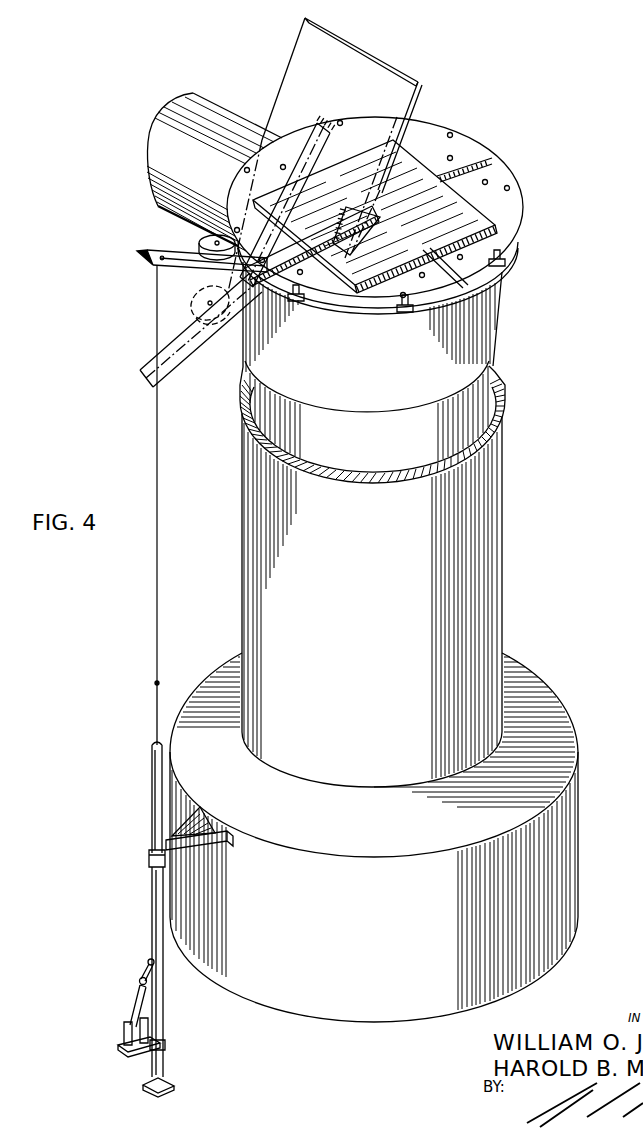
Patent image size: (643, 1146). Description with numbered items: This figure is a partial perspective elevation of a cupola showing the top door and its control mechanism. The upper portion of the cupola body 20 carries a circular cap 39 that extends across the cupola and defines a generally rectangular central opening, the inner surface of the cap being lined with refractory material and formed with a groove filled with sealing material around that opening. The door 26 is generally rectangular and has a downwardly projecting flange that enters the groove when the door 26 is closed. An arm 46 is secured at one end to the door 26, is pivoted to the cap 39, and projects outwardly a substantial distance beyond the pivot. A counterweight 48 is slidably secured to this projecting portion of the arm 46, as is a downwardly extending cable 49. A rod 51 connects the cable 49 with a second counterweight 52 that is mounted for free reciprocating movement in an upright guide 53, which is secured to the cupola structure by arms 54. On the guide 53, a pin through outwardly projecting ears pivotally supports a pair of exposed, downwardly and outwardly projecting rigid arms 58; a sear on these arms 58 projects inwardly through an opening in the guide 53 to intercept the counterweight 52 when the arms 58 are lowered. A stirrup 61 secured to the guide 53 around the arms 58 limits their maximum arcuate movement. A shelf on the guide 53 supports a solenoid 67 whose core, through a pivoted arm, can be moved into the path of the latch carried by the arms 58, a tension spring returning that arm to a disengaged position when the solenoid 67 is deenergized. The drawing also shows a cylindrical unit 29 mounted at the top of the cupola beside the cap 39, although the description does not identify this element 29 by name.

The cupola body 20 is at (497, 477).
The door 26 is at (400, 80).
The motor 29 is at (215, 112).
The circular cap 39 is at (467, 157).
The arm 46 is at (300, 248).
The counterweight 48 is at (147, 248).
The cable 49 is at (158, 592).
The rod 51 is at (157, 702).
The counterweight 52 is at (152, 778).
The upright guide 53 is at (157, 932).
The arms 54 is at (208, 842).
The rigid arms 58 is at (141, 1002).
The stirrup 61 is at (140, 979).
The solenoid 67 is at (120, 1038).